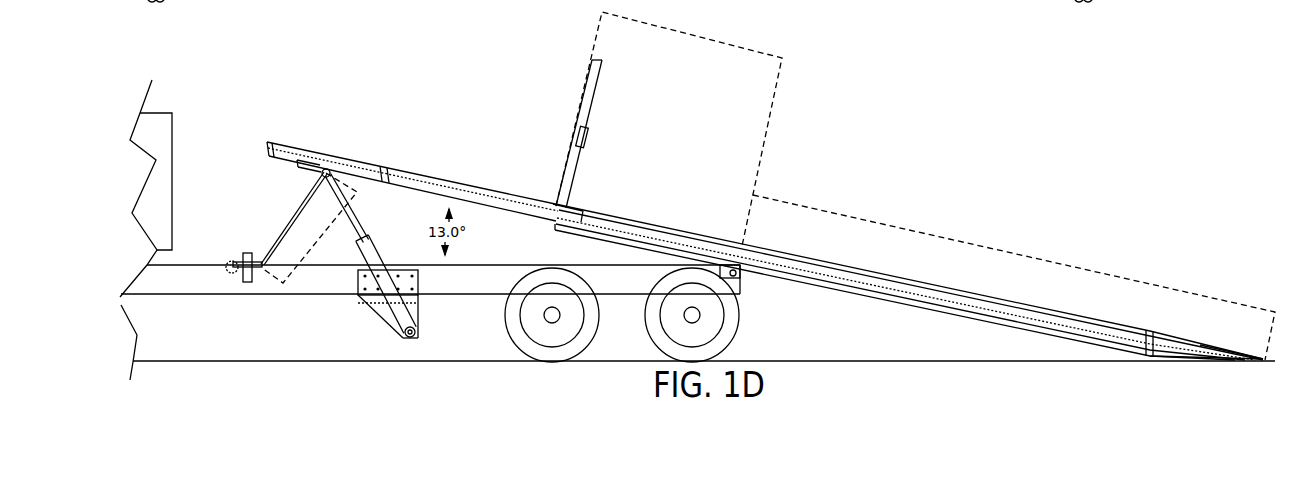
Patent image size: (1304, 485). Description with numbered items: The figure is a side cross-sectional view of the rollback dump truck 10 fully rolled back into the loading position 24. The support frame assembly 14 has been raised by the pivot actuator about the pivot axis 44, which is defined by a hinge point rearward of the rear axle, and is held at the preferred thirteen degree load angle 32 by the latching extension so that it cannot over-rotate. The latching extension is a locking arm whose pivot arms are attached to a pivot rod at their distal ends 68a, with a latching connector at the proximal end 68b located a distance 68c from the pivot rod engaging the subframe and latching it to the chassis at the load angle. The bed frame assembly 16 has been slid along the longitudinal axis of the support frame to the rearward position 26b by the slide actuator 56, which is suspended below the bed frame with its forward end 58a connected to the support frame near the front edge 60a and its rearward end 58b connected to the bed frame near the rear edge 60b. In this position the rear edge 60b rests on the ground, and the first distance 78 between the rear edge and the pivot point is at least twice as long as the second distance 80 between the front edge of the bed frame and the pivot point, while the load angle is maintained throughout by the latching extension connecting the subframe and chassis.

The rollback dump truck 10 is at (196, 60).
The support frame assembly 14 is at (500, 212).
The bed frame assembly 16 is at (933, 275).
The loading position 24 is at (1130, 210).
The rearward position 26b is at (532, 178).
The load angle 32 is at (433, 212).
The pivot axis 44 is at (738, 277).
The slide actuator 56 is at (892, 297).
The forward end of slide actuator 58a is at (383, 174).
The rearward end of slide actuator 58b is at (1148, 343).
The front edge 60a is at (280, 147).
The rear edge 60b is at (1267, 360).
The distal ends of pivot arms 68a is at (326, 169).
The proximal end of pivot arm 68b is at (262, 266).
The distance 68c is at (313, 237).
The first distance 78 is at (1017, 253).
The second distance 80 is at (713, 45).